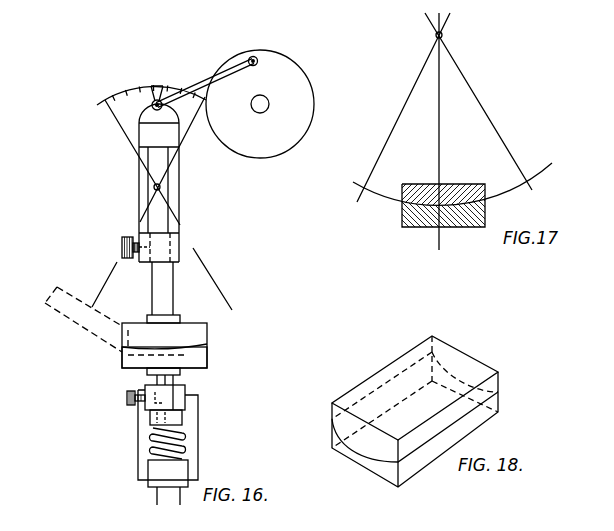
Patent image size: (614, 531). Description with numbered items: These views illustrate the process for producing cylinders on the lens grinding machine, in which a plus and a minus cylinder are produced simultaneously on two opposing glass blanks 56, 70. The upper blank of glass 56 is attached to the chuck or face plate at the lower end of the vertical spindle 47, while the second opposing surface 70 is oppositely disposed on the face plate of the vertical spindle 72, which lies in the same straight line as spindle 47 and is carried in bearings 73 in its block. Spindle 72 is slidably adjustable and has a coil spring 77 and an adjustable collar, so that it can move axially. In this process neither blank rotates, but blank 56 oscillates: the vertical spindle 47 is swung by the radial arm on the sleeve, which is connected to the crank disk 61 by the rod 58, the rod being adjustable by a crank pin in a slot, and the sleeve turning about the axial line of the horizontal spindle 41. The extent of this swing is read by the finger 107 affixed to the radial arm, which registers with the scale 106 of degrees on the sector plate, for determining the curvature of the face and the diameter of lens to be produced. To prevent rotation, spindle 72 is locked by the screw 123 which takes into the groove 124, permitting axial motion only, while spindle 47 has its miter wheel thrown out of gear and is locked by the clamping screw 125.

In FIG. 16, the horizontal spindle 41 is at (160, 187).
In FIG. 17, the horizontal spindle 41 is at (442, 35).
In FIG. 16, the vertical spindle 47 is at (162, 223).
In FIG. 16, the blank of glass 56 is at (126, 327).
In FIG. 17, the blank of glass 56 is at (433, 188).
In FIG. 18, the blank of glass 56 is at (415, 399).
In FIG. 16, the rod 58 is at (206, 82).
In FIG. 16, the crank disk 61 is at (260, 104).
In FIG. 16, the second opposing surface 70 is at (164, 361).
In FIG. 17, the second opposing surface 70 is at (422, 224).
In FIG. 18, the second opposing surface 70 is at (415, 434).
In FIG. 16, the vertical spindle 72 is at (172, 382).
In FIG. 16, the bearings 73 is at (168, 482).
In FIG. 16, the coil spring 77 is at (153, 457).
In FIG. 16, the scale 106 is at (112, 96).
In FIG. 16, the finger 107 is at (150, 86).
In FIG. 16, the screw 123 is at (128, 398).
In FIG. 16, the groove 124 is at (157, 383).
In FIG. 16, the clamping screw 125 is at (122, 241).